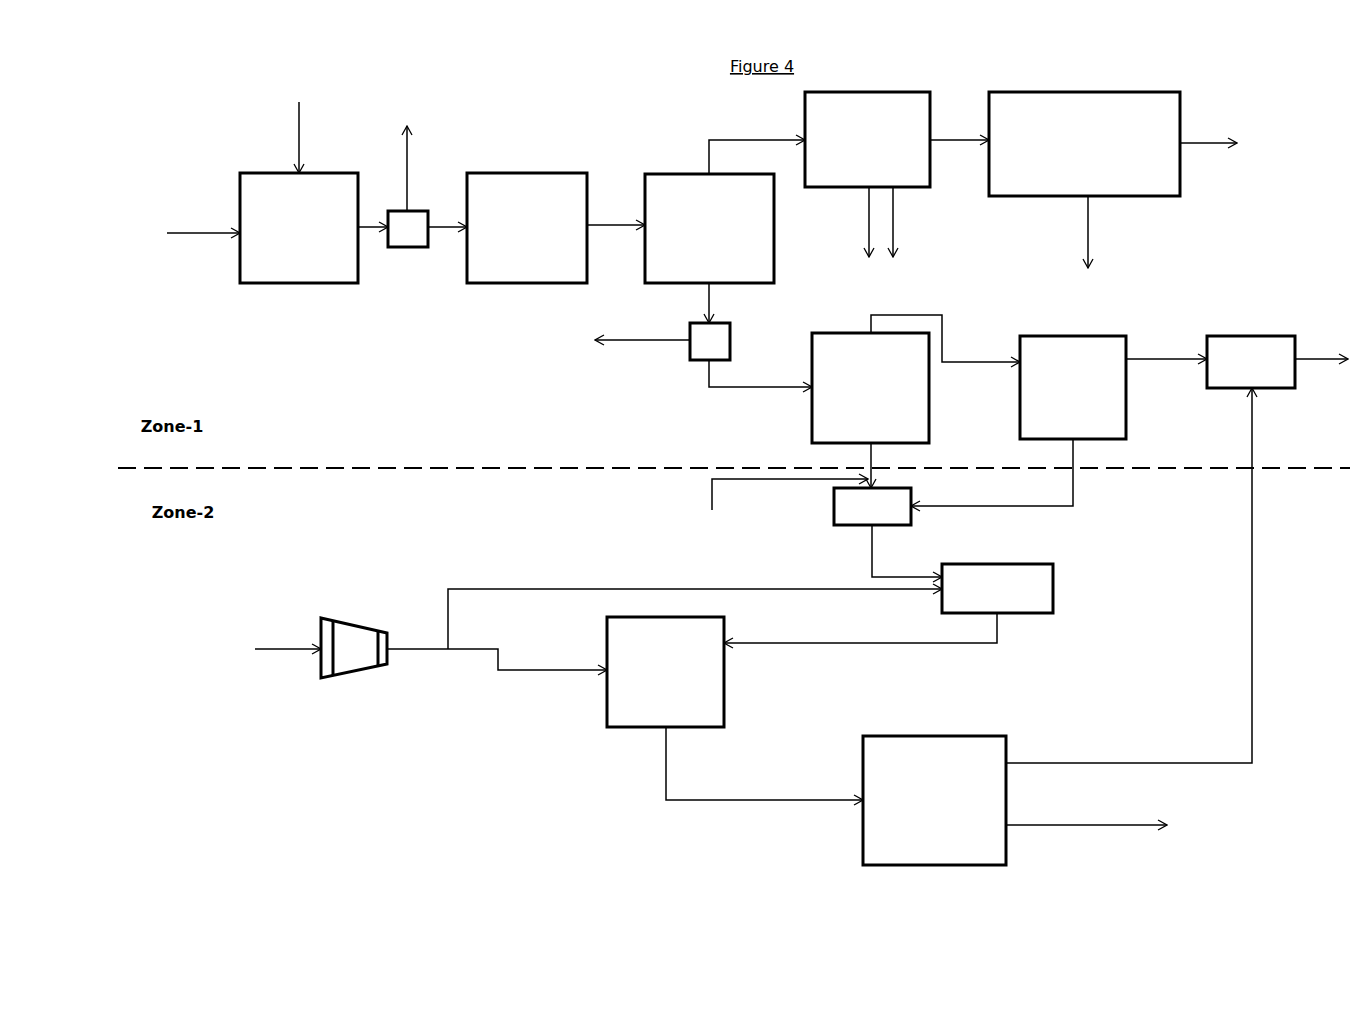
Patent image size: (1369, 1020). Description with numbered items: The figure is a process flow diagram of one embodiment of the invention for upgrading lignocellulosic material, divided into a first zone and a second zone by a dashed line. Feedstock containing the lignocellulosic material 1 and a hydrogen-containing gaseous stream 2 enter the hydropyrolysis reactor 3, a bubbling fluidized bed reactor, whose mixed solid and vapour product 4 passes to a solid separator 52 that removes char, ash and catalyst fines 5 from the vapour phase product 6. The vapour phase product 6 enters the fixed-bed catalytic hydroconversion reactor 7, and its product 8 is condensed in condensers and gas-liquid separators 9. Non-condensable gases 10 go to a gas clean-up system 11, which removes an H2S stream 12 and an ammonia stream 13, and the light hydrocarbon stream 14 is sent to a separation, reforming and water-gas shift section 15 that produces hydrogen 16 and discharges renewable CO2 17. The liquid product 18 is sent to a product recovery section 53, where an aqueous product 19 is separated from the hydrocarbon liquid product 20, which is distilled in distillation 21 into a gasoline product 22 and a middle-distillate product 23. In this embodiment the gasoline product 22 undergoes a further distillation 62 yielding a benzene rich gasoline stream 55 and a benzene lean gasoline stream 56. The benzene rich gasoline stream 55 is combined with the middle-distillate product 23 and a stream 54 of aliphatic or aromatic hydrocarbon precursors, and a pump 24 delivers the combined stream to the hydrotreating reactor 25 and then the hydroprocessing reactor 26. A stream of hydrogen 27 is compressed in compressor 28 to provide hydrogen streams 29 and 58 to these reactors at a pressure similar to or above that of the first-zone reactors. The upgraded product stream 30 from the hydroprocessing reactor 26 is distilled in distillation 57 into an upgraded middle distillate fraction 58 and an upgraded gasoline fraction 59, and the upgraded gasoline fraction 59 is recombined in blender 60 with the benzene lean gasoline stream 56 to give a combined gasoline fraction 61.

The lignocellulosic material feedstock 1 is at (203, 247).
The hydrogen-containing gaseous stream 2 is at (309, 137).
The hydropyrolysis reactor 3 is at (299, 228).
The hydropyrolysis reactor product 4 is at (373, 237).
The char, ash and catalyst fines 5 is at (415, 168).
The vapour phase product 6 is at (447, 237).
The catalytic hydroconversion reactor 7 is at (527, 228).
The hydroconversion reactor product 8 is at (616, 237).
The condensers and gas-liquid separators 9 is at (709, 228).
The non-condensable gases 10 is at (757, 138).
The gas clean-up system 11 is at (867, 139).
The H2S stream 12 is at (851, 222).
The ammonia stream 13 is at (904, 222).
The light hydrocarbon stream 14 is at (959, 127).
The separation, reforming and water-gas shift section 15 is at (1084, 144).
The hydrogen stream 16 is at (1208, 155).
The renewable CO2 by-product 17 is at (1075, 232).
The liquid product 18 is at (693, 303).
The aqueous product 19 is at (642, 326).
The hydrocarbon liquid product 20 is at (760, 373).
The distillation 21 is at (870, 388).
The gasoline product 22 is at (945, 338).
The middle-distillate product 23 is at (886, 465).
The pump 24 is at (888, 532).
The hydrotreating reactor 25 is at (888, 603).
The fixed-bed hydroprocessing reactor 26 is at (665, 672).
The hydrogen stream 27 is at (288, 657).
The compressor 28 is at (354, 662).
The compressed hydrogen stream 29 is at (497, 648).
The upgraded product stream 30 is at (764, 763).
The solid separator 52 is at (408, 229).
The product recovery section 53 is at (710, 341).
The hydrocarbon precursor stream 54 is at (784, 508).
The benzene rich gasoline stream 55 is at (1004, 472).
The benzene lean gasoline stream 56 is at (1166, 348).
The distillation 57 is at (934, 800).
The compressed hydrogen stream / upgraded middle distillate fraction 58 is at (807, 697).
The upgraded gasoline fraction 59 is at (1129, 575).
The blender 60 is at (1251, 362).
The combined gasoline fraction 61 is at (1321, 348).
The further distillation 62 is at (1073, 387).